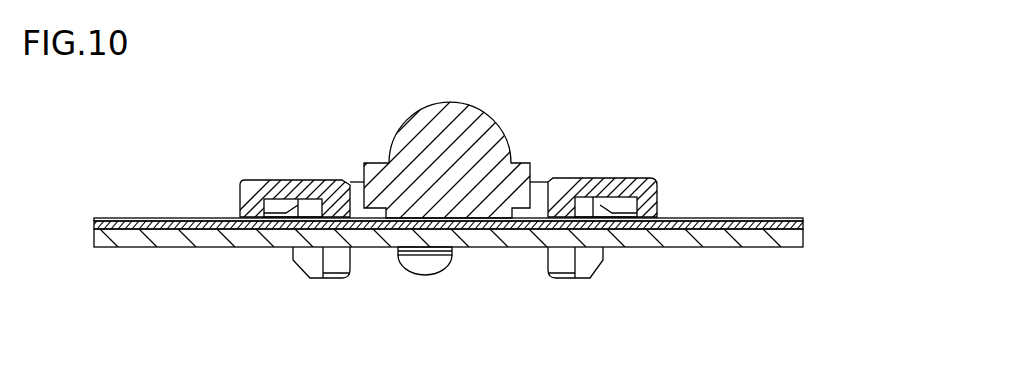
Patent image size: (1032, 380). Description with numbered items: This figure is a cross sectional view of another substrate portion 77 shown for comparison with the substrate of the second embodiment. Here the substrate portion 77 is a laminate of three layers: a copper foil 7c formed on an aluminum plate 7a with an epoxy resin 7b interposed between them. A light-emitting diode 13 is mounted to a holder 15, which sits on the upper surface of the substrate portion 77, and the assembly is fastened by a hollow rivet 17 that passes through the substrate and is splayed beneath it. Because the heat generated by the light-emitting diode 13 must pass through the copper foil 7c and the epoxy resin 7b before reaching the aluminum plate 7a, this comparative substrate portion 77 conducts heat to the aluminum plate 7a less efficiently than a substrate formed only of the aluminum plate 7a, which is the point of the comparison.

The light-emitting diode 13 is at (450, 107).
The holder 15 is at (603, 178).
The hollow rivet 17 is at (567, 263).
The substrate portion 77 is at (501, 226).
The aluminum plate 7a is at (478, 252).
The epoxy resin 7b is at (803, 224).
The copper foil 7c is at (775, 218).